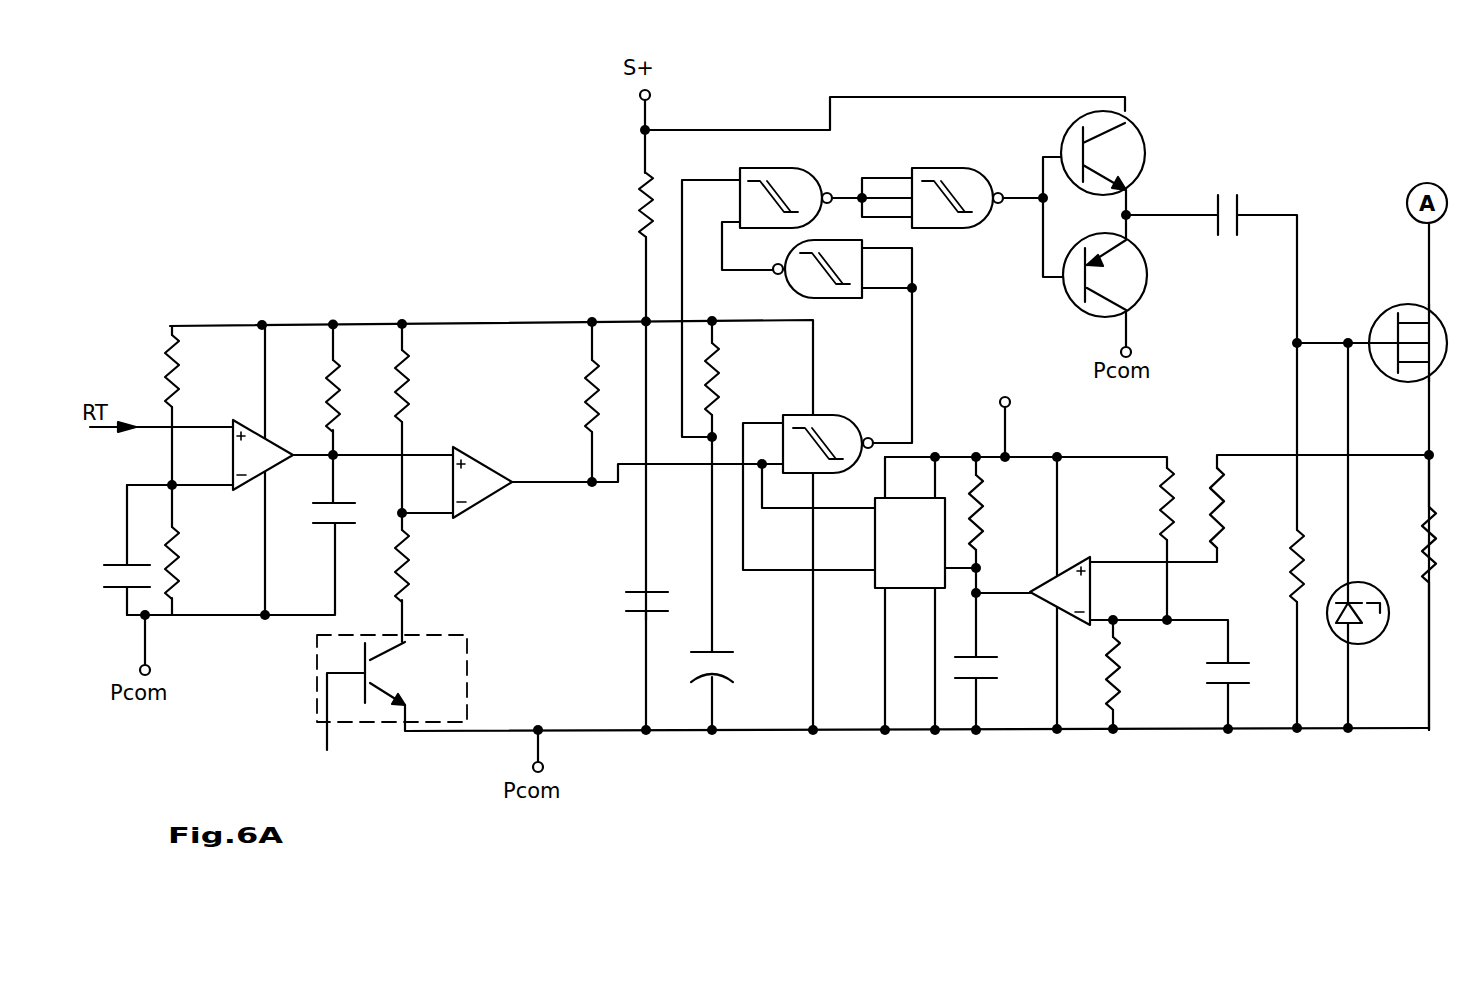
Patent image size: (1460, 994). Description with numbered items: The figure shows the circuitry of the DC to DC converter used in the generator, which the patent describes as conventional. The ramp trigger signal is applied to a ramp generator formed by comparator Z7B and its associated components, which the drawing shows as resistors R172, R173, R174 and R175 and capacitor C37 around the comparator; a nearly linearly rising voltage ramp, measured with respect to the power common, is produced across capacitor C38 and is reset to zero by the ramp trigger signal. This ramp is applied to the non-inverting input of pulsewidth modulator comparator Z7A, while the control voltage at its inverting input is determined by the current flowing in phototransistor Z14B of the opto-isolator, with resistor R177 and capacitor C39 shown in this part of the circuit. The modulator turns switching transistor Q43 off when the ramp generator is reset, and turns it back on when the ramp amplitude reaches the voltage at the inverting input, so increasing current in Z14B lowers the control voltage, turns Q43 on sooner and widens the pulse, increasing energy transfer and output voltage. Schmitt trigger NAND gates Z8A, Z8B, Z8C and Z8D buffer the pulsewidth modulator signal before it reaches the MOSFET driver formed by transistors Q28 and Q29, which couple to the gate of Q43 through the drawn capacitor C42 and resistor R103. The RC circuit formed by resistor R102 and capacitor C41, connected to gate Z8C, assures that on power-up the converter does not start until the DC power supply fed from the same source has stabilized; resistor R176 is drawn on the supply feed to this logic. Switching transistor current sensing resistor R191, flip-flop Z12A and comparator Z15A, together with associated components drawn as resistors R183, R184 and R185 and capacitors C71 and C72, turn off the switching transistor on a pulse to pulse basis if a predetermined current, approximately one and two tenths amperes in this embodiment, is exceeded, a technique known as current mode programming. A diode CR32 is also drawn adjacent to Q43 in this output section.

The resistor R172 is at (134, 371).
The resistor R173 is at (205, 563).
The resistor R174 is at (372, 475).
The resistor R175 is at (435, 383).
The resistor R176 is at (610, 205).
The resistor R177 is at (557, 401).
The resistor R102 is at (745, 379).
The resistor R103 is at (1263, 566).
The resistor R183 is at (1007, 512).
The resistor R184 is at (1197, 589).
The resistor R185 is at (1133, 504).
The switching transistor current sensing resistor R191 is at (1401, 543).
The capacitor C37 is at (115, 561).
The capacitor C38 is at (350, 499).
The capacitor C39 is at (632, 591).
The capacitor C41 is at (728, 652).
The capacitor C42 is at (1223, 231).
The capacitor C71 is at (990, 653).
The capacitor C72 is at (1244, 660).
The pulsewidth modulator comparator Z7A is at (489, 490).
The comparator Z7B is at (249, 440).
The Schmitt trigger NAND gate Z8A is at (833, 427).
The Schmitt trigger NAND gate Z8B is at (957, 182).
The Schmitt trigger NAND gate Z8C is at (786, 182).
The Schmitt trigger NAND gate Z8D is at (827, 285).
The flip-flop Z12A is at (938, 557).
The phototransistor Z14B is at (426, 678).
The comparator Z15A is at (1079, 574).
The transistor Q28 is at (1128, 153).
The transistor Q29 is at (1102, 291).
The switching transistor Q43 is at (1396, 330).
The zener diode CR32 is at (1370, 629).